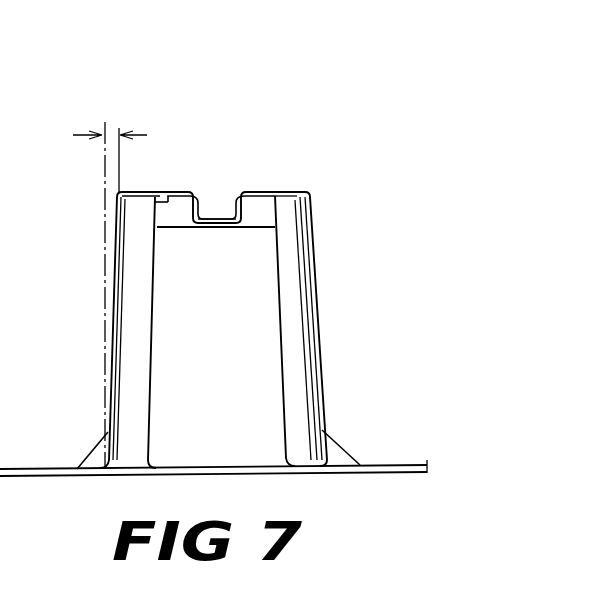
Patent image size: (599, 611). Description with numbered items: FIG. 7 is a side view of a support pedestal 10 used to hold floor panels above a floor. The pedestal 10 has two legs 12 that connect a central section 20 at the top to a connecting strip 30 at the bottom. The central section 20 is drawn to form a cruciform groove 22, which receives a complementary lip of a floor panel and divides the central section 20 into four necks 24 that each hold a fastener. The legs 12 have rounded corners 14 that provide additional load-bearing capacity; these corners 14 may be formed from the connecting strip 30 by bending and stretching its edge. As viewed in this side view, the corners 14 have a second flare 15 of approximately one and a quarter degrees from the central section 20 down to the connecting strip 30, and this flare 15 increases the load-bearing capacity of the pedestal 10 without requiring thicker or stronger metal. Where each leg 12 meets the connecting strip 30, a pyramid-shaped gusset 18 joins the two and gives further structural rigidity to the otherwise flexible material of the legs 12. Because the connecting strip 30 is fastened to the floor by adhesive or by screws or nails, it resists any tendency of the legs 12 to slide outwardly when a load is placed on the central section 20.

The support pedestal 10 is at (308, 140).
The leg 12 is at (322, 290).
The rounded corner 14 is at (145, 316).
The second flare 15 is at (112, 128).
The gusset 18 is at (337, 453).
The central section 20 is at (222, 152).
The groove 22 is at (224, 218).
The neck 24 is at (291, 192).
The connecting strip 30 is at (390, 464).